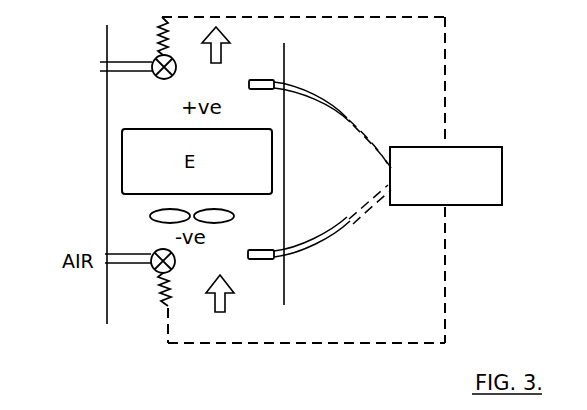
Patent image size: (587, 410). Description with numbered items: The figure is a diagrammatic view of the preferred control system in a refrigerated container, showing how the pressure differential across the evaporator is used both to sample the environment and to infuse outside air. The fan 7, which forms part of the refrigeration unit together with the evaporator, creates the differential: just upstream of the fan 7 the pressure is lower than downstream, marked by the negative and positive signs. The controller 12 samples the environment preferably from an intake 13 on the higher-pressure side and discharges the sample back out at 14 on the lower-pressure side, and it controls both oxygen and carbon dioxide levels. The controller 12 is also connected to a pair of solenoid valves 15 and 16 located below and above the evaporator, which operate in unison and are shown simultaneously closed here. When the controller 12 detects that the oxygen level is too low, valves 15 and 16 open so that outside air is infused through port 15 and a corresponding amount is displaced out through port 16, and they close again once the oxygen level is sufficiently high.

The fan 7 is at (150, 216).
The controller 12 is at (502, 153).
The intake 13 is at (262, 80).
The discharge 14 is at (263, 250).
The solenoid valve 15 is at (152, 270).
The solenoid valve 16 is at (152, 63).